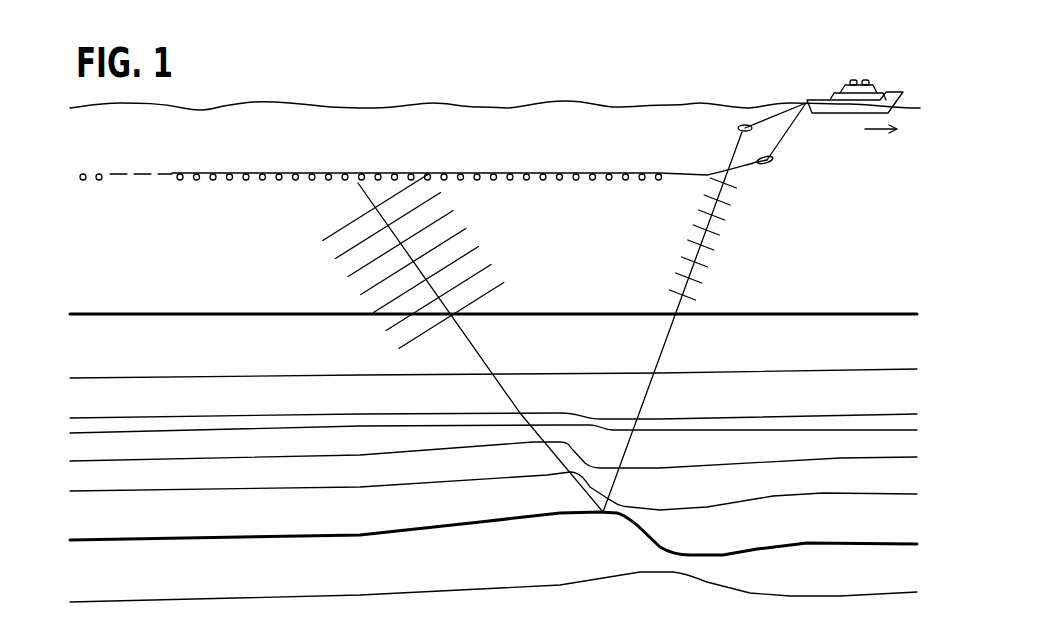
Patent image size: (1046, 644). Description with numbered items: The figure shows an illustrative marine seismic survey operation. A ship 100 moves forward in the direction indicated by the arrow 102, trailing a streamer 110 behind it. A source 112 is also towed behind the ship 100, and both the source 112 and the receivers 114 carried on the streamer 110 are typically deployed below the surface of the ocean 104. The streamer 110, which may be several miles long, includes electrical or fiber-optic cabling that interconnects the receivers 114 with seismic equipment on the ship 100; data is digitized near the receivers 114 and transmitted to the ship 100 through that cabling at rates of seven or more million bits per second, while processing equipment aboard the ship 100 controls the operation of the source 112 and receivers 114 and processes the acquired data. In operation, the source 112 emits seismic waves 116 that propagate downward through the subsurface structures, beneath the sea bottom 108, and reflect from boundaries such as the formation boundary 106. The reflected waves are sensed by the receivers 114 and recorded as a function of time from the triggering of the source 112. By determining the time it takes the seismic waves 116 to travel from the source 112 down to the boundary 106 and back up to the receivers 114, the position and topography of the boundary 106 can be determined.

The ship 100 is at (833, 91).
The arrow 102 is at (883, 145).
The surface of the ocean 104 is at (509, 108).
The formation boundary 106 is at (634, 524).
The water bottom (seabed) 108 is at (825, 313).
The streamer 110 is at (785, 142).
The source 112 is at (726, 122).
The receivers 114 is at (212, 182).
The seismic waves 116 is at (697, 288).